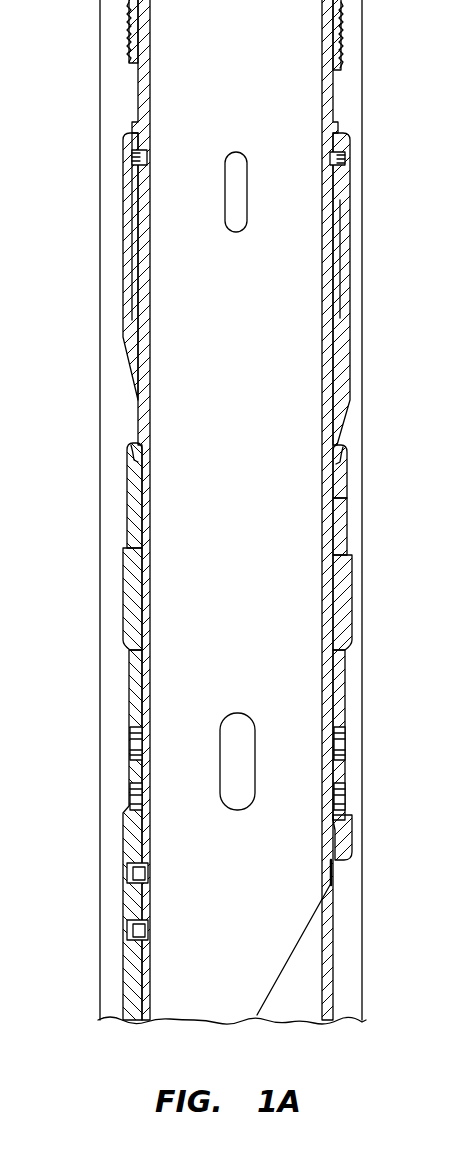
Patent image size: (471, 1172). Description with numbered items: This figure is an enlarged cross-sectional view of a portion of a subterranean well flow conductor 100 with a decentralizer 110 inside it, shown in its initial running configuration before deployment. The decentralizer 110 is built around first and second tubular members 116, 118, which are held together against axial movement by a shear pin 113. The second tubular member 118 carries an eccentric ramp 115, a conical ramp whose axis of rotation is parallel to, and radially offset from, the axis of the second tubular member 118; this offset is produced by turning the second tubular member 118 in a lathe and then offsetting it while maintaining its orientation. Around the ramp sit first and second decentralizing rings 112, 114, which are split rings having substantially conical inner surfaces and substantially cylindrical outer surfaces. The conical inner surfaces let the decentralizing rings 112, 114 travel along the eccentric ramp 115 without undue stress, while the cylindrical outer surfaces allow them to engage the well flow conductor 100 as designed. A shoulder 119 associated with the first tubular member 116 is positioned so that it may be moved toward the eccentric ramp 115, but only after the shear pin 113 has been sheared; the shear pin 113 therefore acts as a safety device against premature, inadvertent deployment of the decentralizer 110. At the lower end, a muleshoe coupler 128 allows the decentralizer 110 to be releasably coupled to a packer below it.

The subterranean well flow conductor 100 is at (99, 248).
The decentralizer 110 is at (124, 436).
The first decentralizing ring 112 is at (340, 486).
The shear pin 113 is at (127, 875).
The second decentralizing ring 114 is at (340, 536).
The eccentric ramp 115 is at (349, 431).
The first tubular member 116 is at (348, 696).
The second tubular member 118 is at (330, 356).
The shoulder 119 is at (340, 608).
The muleshoe coupler 128 is at (297, 1002).